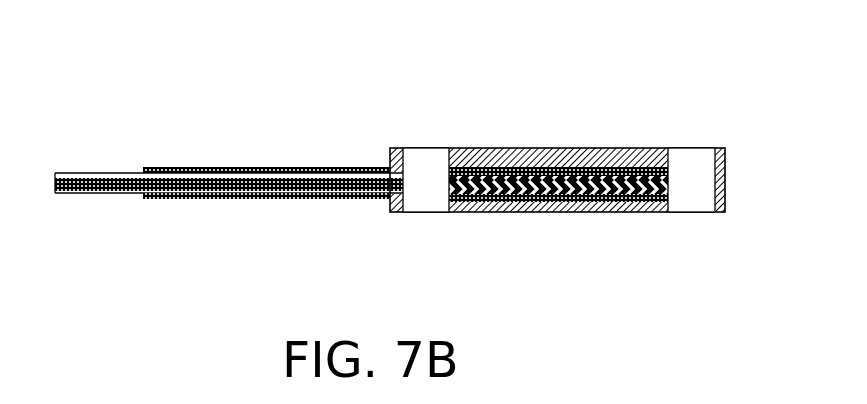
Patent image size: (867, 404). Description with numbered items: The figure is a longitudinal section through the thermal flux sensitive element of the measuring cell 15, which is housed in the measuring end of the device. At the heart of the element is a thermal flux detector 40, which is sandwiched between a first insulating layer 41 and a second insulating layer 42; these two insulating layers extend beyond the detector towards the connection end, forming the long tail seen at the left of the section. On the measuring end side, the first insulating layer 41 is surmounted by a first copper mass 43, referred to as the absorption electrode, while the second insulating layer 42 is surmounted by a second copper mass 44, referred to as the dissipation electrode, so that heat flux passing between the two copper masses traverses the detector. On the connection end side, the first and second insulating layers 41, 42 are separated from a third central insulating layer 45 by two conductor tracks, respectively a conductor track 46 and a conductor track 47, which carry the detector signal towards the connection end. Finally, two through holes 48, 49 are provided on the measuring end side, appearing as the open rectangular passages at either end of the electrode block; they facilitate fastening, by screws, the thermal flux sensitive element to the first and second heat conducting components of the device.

The measuring cell 15 is at (585, 127).
The thermal flux detector 40 is at (615, 212).
The first insulating layer 41 is at (302, 168).
The second insulating layer 42 is at (293, 197).
The first copper mass 43 is at (653, 147).
The second copper mass 44 is at (470, 213).
The third central insulating layer 45 is at (75, 193).
The conductor track 46 is at (112, 173).
The conductor track 47 is at (122, 195).
The through hole 48 is at (417, 163).
The through hole 49 is at (690, 198).